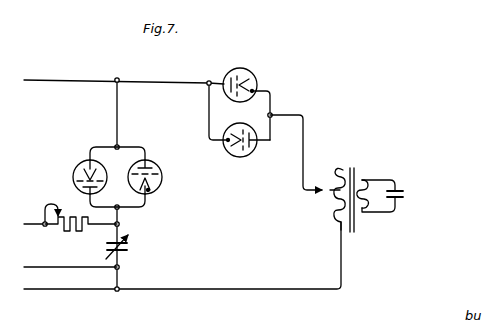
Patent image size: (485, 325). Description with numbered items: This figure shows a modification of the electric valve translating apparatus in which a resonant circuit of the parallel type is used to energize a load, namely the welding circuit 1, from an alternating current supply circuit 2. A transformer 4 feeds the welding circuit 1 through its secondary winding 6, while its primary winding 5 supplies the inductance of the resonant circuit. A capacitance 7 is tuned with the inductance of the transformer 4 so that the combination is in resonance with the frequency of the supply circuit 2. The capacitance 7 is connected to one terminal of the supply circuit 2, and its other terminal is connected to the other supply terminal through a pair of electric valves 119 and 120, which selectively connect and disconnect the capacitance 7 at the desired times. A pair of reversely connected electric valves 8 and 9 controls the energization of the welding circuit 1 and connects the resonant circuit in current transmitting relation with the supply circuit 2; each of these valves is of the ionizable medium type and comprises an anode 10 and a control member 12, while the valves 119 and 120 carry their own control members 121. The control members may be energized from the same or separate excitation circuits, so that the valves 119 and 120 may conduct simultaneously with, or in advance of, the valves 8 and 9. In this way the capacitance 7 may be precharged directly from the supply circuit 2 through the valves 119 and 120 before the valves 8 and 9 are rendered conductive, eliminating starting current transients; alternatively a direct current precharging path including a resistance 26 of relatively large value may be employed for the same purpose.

The welding circuit 1 is at (398, 196).
The alternating current supply circuit 2 is at (37, 77).
The transformer 4 is at (353, 234).
The primary winding 5 is at (333, 213).
The secondary winding 6 is at (367, 180).
The capacitance 7 is at (131, 247).
The electric valve 8 is at (251, 73).
The electric valve 9 is at (257, 147).
The anode 10 is at (31, 227).
The control member 12 is at (234, 73).
The resistance 26 is at (81, 238).
The electric valve 119 is at (80, 166).
The electric valve 120 is at (154, 165).
The grid 121 is at (74, 178).